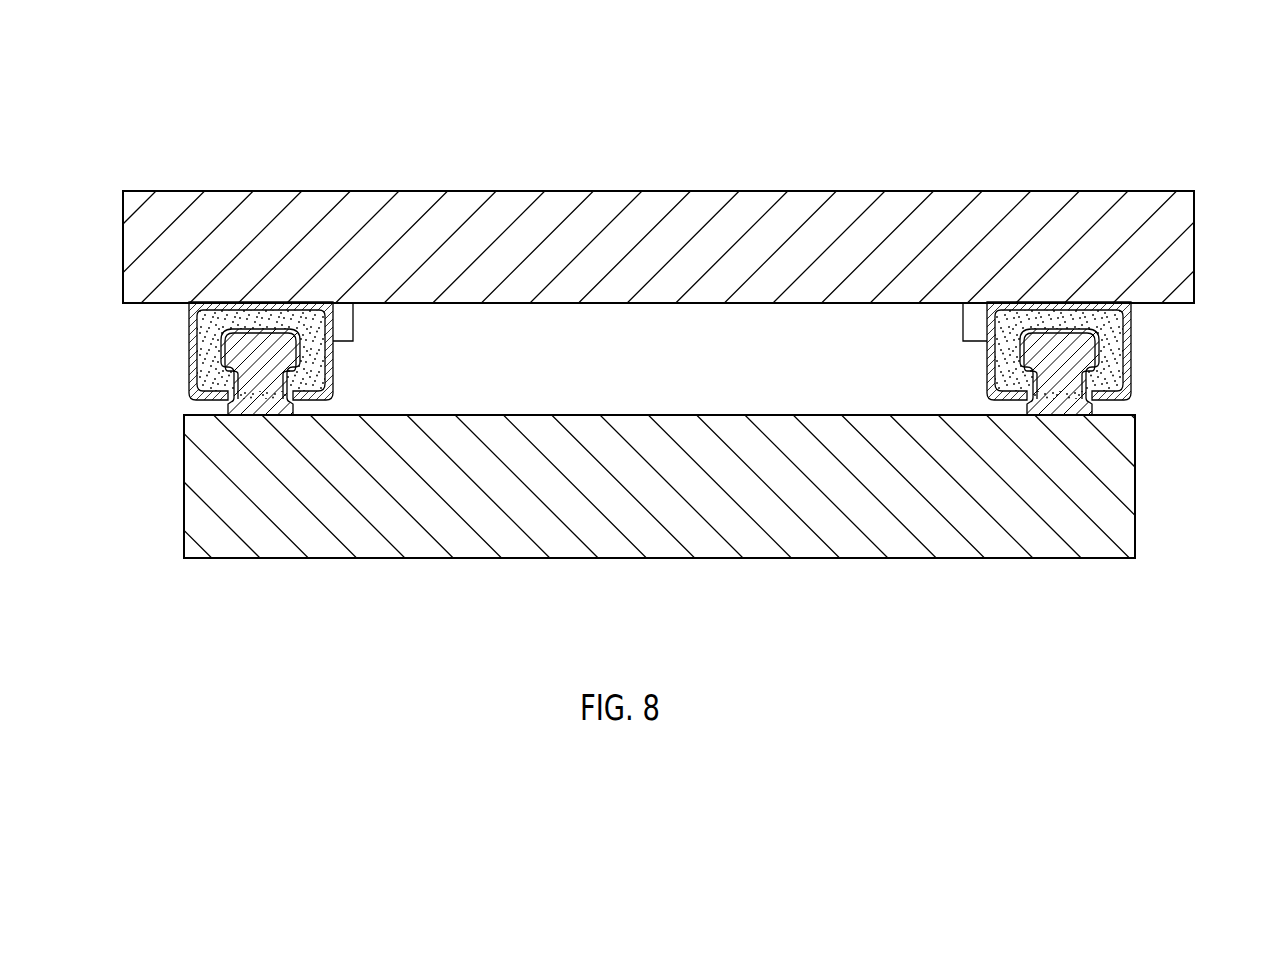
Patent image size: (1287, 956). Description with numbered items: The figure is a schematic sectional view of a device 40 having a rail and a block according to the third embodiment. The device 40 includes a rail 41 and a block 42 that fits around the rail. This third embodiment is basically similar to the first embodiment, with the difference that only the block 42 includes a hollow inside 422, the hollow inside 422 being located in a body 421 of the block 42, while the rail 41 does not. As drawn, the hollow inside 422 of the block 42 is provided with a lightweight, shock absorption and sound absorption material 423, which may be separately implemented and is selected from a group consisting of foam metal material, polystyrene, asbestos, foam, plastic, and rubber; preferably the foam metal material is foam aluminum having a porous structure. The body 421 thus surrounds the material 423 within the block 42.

The device having a rail and a block 40 is at (188, 112).
The rail 41 is at (212, 405).
The block 42 is at (1137, 388).
The body 421 is at (1130, 363).
The hollow inside 422 is at (1115, 347).
The lightweight, shock absorption and sound absorption material 423 is at (1110, 383).